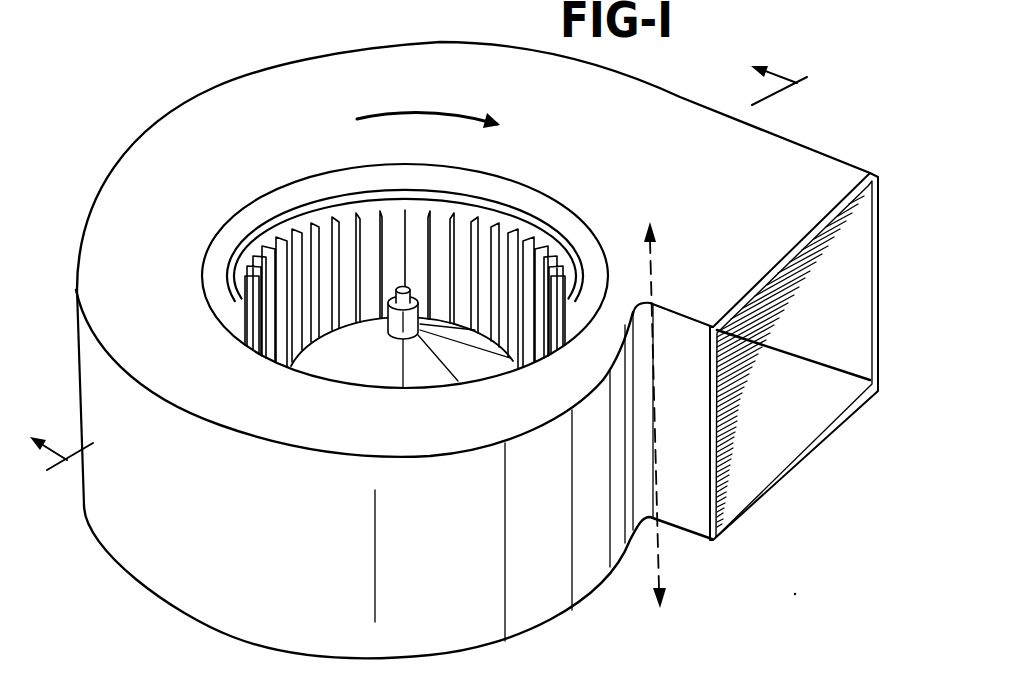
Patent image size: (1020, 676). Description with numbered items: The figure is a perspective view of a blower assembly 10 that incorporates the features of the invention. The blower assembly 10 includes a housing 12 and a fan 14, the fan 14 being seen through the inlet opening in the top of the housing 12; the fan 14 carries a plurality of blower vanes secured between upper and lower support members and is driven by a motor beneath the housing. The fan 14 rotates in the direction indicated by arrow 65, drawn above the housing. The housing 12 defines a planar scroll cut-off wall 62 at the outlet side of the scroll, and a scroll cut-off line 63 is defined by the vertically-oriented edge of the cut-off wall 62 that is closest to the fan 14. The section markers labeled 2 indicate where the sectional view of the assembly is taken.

The blower assembly 10 is at (188, 70).
The housing 12 is at (293, 57).
The fan 14 is at (291, 250).
The scroll cut-off wall 62 is at (687, 497).
The scroll cut-off line 63 is at (652, 456).
The arrow 65 is at (423, 113).
The section line 2- 2 is at (416, 256).